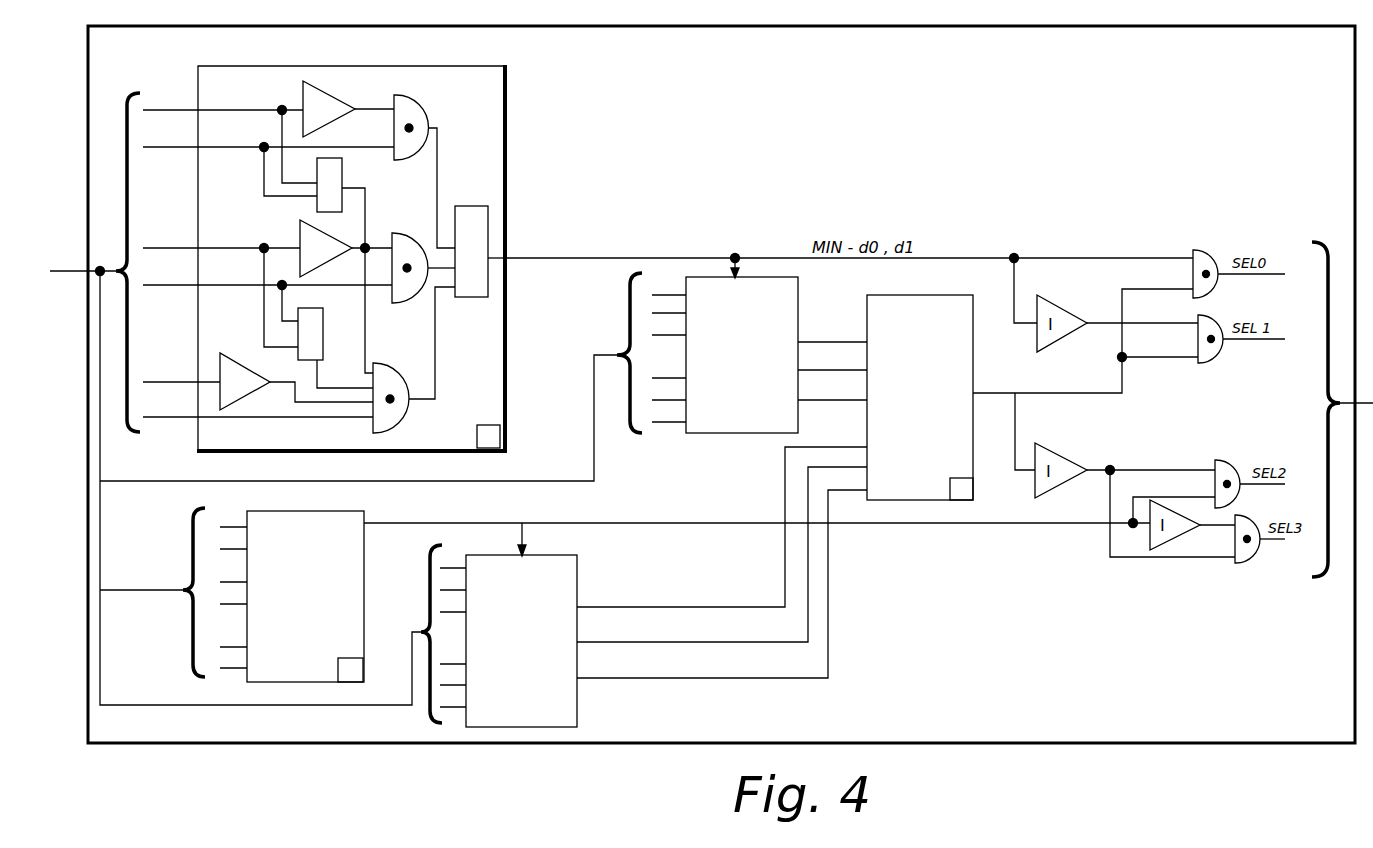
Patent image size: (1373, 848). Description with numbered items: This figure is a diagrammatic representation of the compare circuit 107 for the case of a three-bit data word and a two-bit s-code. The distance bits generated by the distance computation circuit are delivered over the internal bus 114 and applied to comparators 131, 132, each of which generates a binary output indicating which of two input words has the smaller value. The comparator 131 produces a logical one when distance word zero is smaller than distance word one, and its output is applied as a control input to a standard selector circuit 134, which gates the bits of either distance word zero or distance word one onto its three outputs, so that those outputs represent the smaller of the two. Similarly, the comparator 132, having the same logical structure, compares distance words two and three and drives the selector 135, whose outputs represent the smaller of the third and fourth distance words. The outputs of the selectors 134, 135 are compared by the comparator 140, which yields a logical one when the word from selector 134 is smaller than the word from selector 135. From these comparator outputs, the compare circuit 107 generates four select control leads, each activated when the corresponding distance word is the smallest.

The compare circuit 107 is at (1020, 744).
The internal bus 114 is at (70, 269).
The comparator 131 is at (508, 114).
The comparator 132 is at (366, 546).
The selector circuit 134 is at (786, 279).
The selector 135 is at (566, 556).
The comparator 140 is at (930, 295).